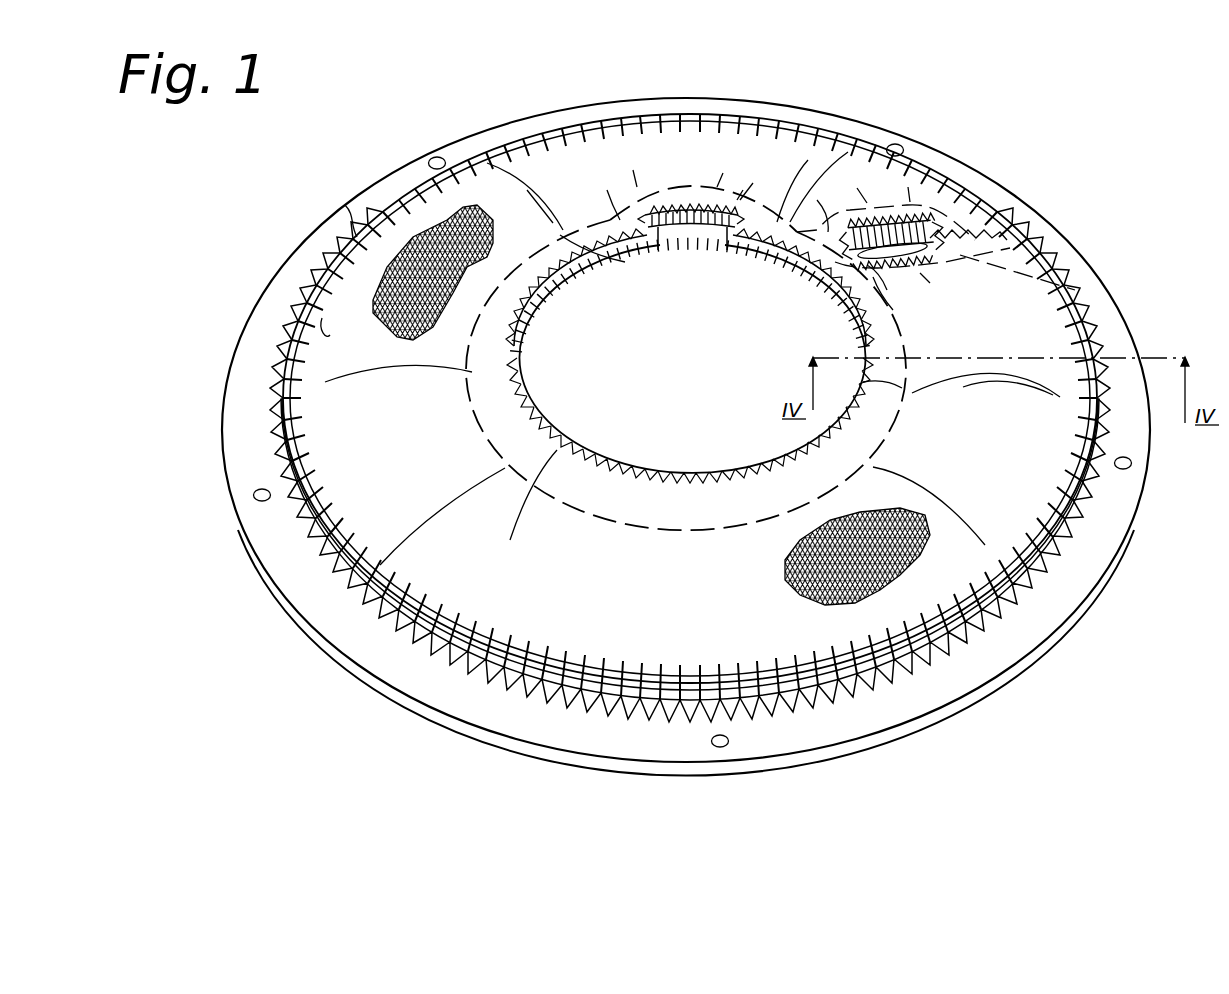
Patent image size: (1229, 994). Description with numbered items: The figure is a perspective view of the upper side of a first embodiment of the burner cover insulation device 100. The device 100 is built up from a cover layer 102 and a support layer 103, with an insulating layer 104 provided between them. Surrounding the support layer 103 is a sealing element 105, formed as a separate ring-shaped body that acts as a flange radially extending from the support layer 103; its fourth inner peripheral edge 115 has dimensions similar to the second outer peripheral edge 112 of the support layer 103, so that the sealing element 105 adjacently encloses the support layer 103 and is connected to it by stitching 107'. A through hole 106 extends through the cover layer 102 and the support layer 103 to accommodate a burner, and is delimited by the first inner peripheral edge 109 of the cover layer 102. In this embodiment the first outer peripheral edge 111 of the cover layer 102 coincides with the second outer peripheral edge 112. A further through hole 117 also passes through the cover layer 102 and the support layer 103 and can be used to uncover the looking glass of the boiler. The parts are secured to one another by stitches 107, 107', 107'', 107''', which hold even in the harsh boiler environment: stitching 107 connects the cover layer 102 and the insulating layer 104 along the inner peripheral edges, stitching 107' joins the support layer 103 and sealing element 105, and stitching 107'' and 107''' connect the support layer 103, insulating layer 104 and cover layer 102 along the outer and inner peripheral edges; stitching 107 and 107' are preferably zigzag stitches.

The burner cover insulation device 100 is at (1032, 158).
The cover layer 102 is at (1040, 263).
The support layer 103 is at (685, 232).
The insulating layer 104 is at (631, 248).
The sealing element 105 is at (1113, 330).
The through hole 106 is at (675, 372).
The stitching 107 is at (690, 356).
The stitching 107' is at (329, 185).
The stitching 107'' is at (262, 298).
The stitching 107''' is at (566, 465).
The first inner peripheral edge 109 is at (642, 468).
The first outer peripheral edge 111 is at (848, 118).
The second outer peripheral edge 112 is at (765, 692).
The fourth inner peripheral edge 115 is at (845, 697).
The further through hole 117 is at (907, 248).